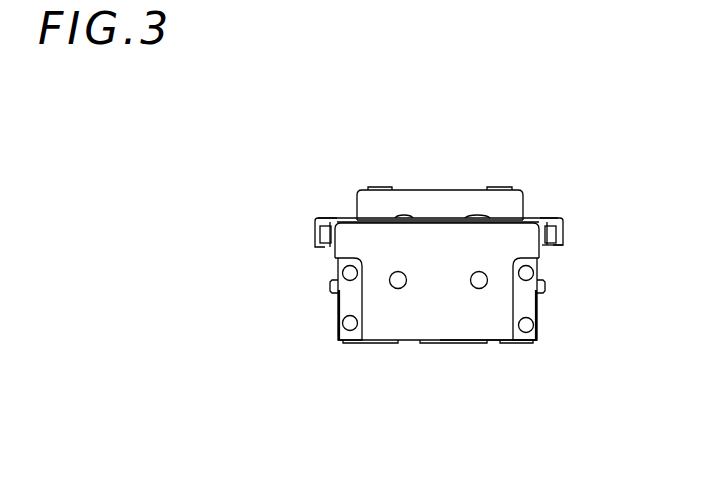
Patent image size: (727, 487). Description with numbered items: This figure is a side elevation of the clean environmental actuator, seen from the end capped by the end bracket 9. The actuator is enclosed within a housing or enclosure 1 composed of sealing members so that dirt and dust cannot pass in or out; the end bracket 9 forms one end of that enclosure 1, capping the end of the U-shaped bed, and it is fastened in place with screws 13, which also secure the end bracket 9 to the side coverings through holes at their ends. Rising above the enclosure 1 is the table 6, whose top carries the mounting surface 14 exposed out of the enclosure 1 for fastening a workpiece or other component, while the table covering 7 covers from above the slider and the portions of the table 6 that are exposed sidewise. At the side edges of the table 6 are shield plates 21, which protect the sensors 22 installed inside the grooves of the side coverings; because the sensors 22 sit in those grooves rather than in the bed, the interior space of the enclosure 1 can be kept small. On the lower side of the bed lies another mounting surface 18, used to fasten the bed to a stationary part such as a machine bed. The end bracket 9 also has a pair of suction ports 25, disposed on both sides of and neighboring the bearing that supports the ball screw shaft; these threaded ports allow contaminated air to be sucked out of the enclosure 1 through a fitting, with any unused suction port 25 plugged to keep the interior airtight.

The housing or enclosure 1 is at (318, 218).
The table 6 is at (380, 187).
The table covering 7 is at (432, 190).
The end bracket 9 is at (383, 328).
The screws 13 is at (330, 285).
The mounting surface 14 is at (385, 190).
The mounting surface 18 is at (508, 343).
The shield plates 21 is at (316, 232).
The sensors 22 is at (548, 246).
The suction ports 25 is at (477, 285).